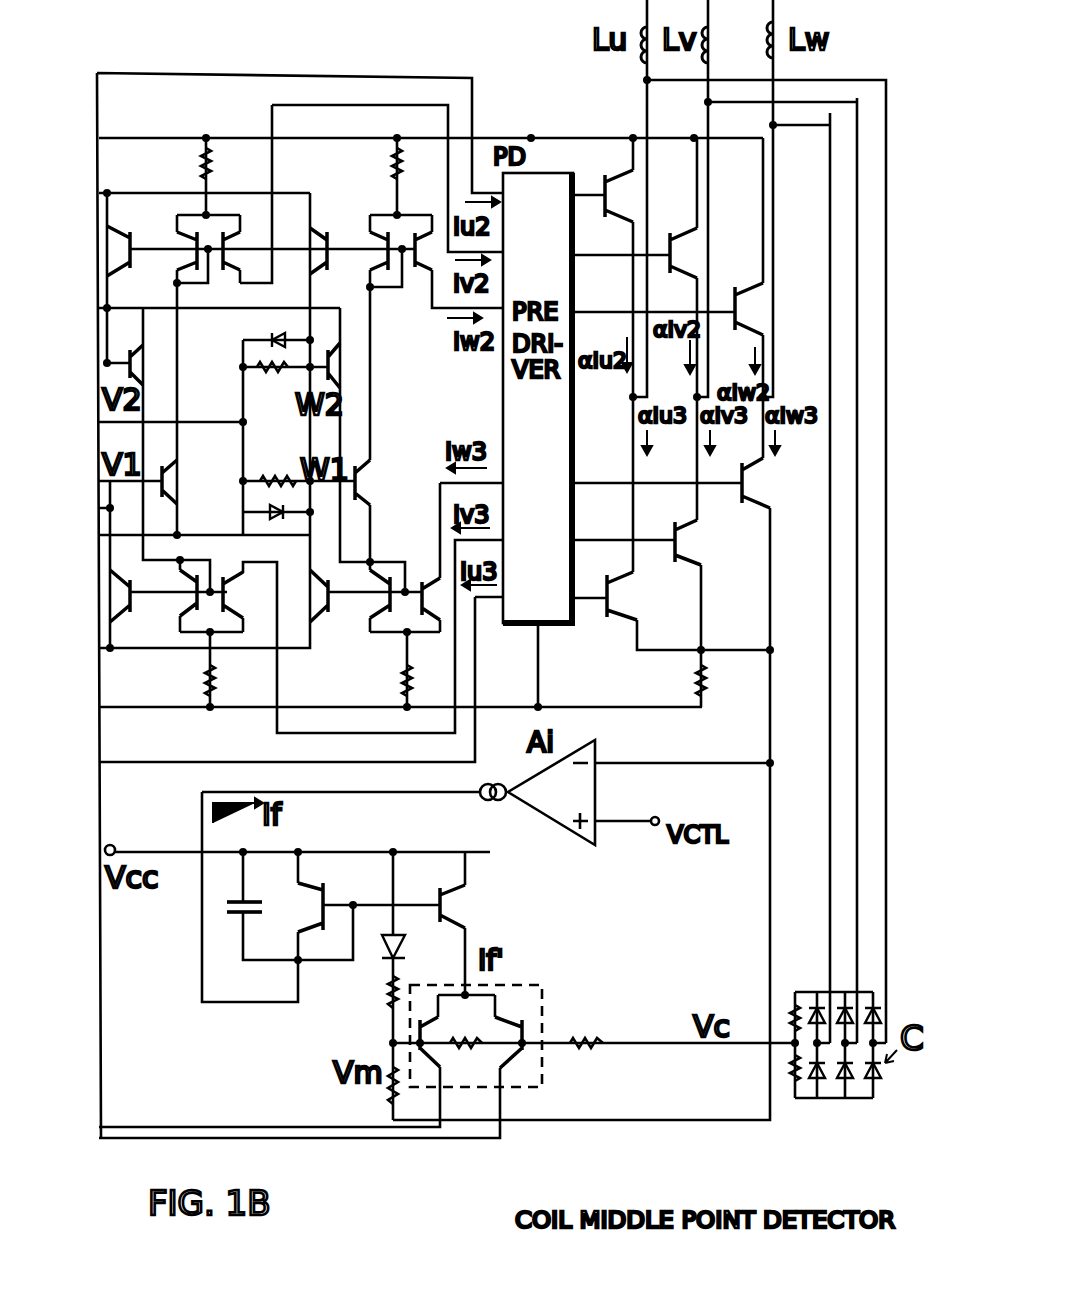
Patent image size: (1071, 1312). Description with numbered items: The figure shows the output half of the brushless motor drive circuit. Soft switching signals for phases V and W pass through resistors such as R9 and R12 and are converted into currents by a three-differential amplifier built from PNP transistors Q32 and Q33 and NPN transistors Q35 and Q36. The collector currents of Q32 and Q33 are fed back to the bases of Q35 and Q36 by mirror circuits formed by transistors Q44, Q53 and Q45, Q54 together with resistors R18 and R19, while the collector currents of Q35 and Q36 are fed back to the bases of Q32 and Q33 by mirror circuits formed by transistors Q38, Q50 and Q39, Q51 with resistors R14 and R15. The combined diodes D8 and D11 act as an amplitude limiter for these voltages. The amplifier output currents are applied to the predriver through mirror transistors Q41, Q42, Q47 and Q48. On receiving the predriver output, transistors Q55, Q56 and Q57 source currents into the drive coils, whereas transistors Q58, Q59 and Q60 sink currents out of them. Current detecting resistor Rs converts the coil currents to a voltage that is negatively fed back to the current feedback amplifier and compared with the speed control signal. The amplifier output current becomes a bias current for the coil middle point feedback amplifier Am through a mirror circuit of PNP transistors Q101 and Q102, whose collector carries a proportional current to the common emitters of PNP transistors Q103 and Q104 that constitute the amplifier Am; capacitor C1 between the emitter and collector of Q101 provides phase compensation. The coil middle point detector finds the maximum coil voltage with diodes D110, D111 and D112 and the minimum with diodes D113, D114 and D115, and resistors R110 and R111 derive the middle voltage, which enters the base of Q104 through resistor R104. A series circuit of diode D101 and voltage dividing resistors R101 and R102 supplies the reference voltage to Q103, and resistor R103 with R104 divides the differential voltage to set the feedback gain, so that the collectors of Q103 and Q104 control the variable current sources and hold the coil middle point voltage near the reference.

The transistor Q50 is at (104, 251).
The transistor Q38 is at (165, 248).
The transistor Q41 is at (248, 251).
The transistor Q51 is at (302, 251).
The transistor Q39 is at (359, 247).
The transistor Q42 is at (406, 276).
The PNP-type transistor Q32 is at (155, 365).
The PNP-type transistor Q33 is at (354, 365).
The NPN-type transistor Q35 is at (189, 482).
The NPN-type transistor Q36 is at (380, 482).
The transistor Q44 is at (165, 590).
The transistor Q47 is at (249, 595).
The transistor Q53 is at (137, 607).
The transistor Q54 is at (336, 607).
The transistor Q45 is at (361, 593).
The transistor Q48 is at (414, 579).
The transistor Q55 is at (605, 184).
The transistor Q56 is at (677, 236).
The transistor Q57 is at (738, 295).
The transistor Q58 is at (610, 611).
The transistor Q59 is at (673, 558).
The transistor Q60 is at (740, 498).
The PNP-type transistor Q101 is at (345, 901).
The PNP-type transistor Q102 is at (483, 906).
The PNP-type transistor Q103 is at (384, 1042).
The PNP-type transistor Q104 is at (525, 1032).
The resistor R14 is at (230, 164).
The resistor R15 is at (421, 164).
The resistor R9 is at (273, 382).
The resistor R12 is at (283, 469).
The resistor R18 is at (189, 680).
The resistor R19 is at (387, 680).
The electric current detecting resistor Rs is at (679, 682).
The voltage dividing resistor R101 is at (362, 996).
The voltage dividing resistor R102 is at (361, 1090).
The resistor R103 is at (474, 1058).
The resistor R104 is at (593, 1058).
The resistor R110 is at (789, 1015).
The resistor R111 is at (791, 1073).
The diode D8 is at (260, 329).
The diode D11 is at (257, 524).
The diode D101 is at (427, 950).
The diode D110 is at (823, 992).
The diode D111 is at (848, 992).
The diode D112 is at (875, 1010).
The diode D113 is at (820, 1080).
The diode D114 is at (848, 1080).
The diode D115 is at (878, 1080).
The capacitor C1 is at (254, 924).
The coil middle point feedback amplifier Am is at (522, 978).